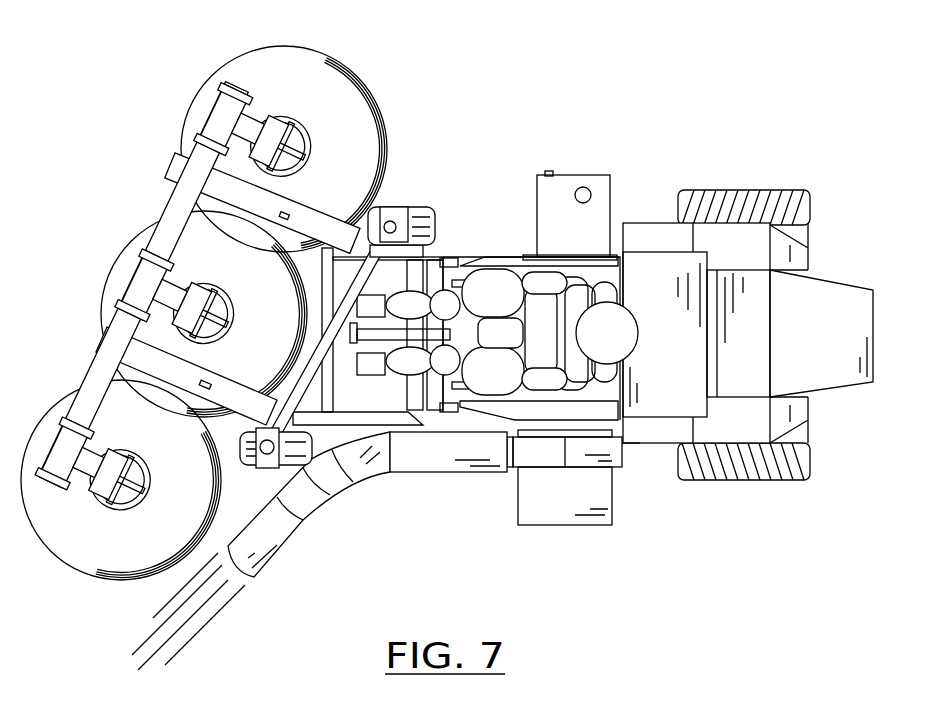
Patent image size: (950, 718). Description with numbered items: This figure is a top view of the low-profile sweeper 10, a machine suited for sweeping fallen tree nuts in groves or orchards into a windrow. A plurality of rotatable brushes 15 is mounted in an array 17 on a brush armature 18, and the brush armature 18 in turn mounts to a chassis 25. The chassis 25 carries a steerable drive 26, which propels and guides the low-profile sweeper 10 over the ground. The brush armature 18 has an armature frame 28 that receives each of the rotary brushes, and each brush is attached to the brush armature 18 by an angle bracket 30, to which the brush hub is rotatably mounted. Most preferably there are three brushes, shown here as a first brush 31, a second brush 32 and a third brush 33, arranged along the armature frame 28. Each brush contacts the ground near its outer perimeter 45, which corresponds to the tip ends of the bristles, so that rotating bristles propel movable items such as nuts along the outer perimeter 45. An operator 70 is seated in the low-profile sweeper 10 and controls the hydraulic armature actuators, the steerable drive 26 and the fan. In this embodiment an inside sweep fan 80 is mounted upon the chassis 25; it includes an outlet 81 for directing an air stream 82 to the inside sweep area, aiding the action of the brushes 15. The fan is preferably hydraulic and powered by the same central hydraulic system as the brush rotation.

The low-profile sweeper 10 is at (490, 100).
The rotatable brushes 15 is at (108, 155).
The array 17 is at (100, 197).
The brush armature 18 is at (176, 208).
The chassis 25 is at (484, 260).
The steerable drive 26 is at (633, 492).
The armature frame 28 is at (310, 218).
The angle bracket 30 is at (265, 125).
The first brush 31 is at (62, 418).
The second brush 32 is at (135, 264).
The third brush 33 is at (210, 112).
The outer perimeter 45 is at (115, 583).
The operator 70 is at (553, 348).
The inside sweep fan 80 is at (515, 472).
The outlet 81 is at (248, 580).
The air stream 82 is at (208, 602).